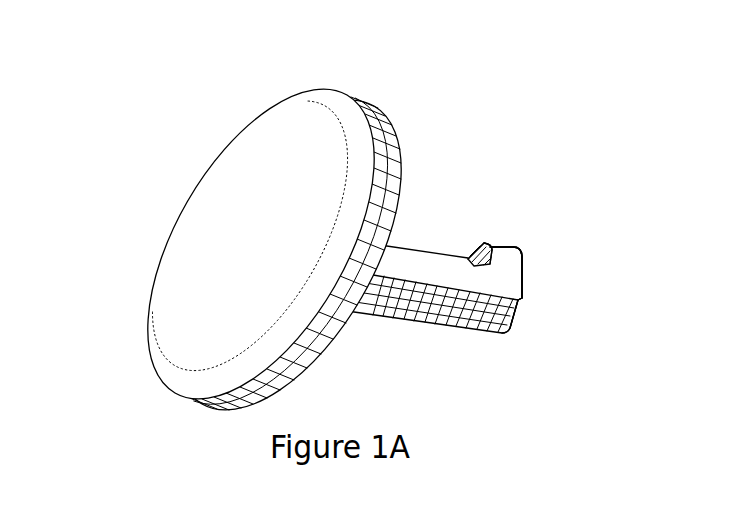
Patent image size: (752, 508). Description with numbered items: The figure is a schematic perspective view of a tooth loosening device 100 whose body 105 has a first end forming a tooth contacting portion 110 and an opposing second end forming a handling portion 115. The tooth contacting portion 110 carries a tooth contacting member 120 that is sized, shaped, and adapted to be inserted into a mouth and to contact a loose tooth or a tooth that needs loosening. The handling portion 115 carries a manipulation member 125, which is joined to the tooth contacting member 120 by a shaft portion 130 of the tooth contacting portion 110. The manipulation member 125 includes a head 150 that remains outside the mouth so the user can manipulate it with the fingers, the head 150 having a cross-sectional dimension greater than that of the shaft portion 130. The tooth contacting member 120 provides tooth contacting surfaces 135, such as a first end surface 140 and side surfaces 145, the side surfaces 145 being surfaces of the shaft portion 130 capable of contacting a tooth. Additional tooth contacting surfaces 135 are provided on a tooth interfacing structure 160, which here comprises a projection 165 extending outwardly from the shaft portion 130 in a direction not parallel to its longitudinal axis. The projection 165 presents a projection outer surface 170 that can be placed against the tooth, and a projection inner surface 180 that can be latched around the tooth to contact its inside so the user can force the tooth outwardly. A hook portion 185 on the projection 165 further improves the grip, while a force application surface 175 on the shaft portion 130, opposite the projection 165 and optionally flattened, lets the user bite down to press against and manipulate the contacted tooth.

The tooth loosening device 100 is at (366, 233).
The body 105 is at (488, 95).
The tooth contacting portion 110 is at (587, 177).
The handling portion 115 is at (318, 245).
The tooth contacting member 120 is at (582, 145).
The manipulation member 125 is at (140, 257).
The shaft portion 130 is at (507, 249).
The tooth contacting surfaces 135 is at (552, 275).
The first end surface 140 is at (523, 282).
The side surfaces 145 is at (523, 267).
The head 150 is at (157, 368).
The tooth interfacing structure 160 is at (517, 207).
The projection 165 is at (507, 245).
The projection outer surface 170 is at (488, 243).
The force application surface 175 is at (447, 262).
The projection inner surface 180 is at (430, 305).
The hook portion 185 is at (476, 252).